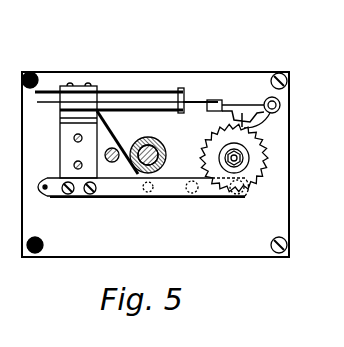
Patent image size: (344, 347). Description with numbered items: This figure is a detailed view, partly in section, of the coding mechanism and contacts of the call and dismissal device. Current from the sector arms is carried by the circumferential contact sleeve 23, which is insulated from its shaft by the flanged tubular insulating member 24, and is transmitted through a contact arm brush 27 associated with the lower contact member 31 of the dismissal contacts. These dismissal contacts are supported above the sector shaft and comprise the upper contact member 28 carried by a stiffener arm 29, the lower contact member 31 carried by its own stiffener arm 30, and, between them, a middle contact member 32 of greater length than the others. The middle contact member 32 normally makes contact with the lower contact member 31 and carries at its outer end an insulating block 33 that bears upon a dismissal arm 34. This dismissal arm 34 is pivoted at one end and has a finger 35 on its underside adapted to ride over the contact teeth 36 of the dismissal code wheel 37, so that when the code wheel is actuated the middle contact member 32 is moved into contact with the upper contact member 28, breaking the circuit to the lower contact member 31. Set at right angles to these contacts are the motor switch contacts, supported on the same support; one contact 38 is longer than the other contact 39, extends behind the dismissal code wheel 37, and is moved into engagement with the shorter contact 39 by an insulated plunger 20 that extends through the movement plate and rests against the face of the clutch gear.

The insulated plunger 20 is at (245, 193).
The sleeve 23 is at (162, 144).
The flanged tubular insulating member 24 is at (148, 143).
The contact arm brush 27 is at (133, 147).
The upper contact member 28 is at (148, 92).
The stiffener arm 29 is at (155, 90).
The stiffener arm 30 is at (125, 110).
The lower contact member 31 is at (108, 113).
The middle contact member 32 is at (200, 99).
The insulating block 33 is at (222, 103).
The dismissal arm 34 is at (259, 102).
The finger 35 is at (257, 122).
The contact teeth 36 is at (270, 145).
The dismissal code wheel 37 is at (250, 162).
The motor switch contact 38 is at (220, 197).
The motor switch contact 39 is at (180, 196).